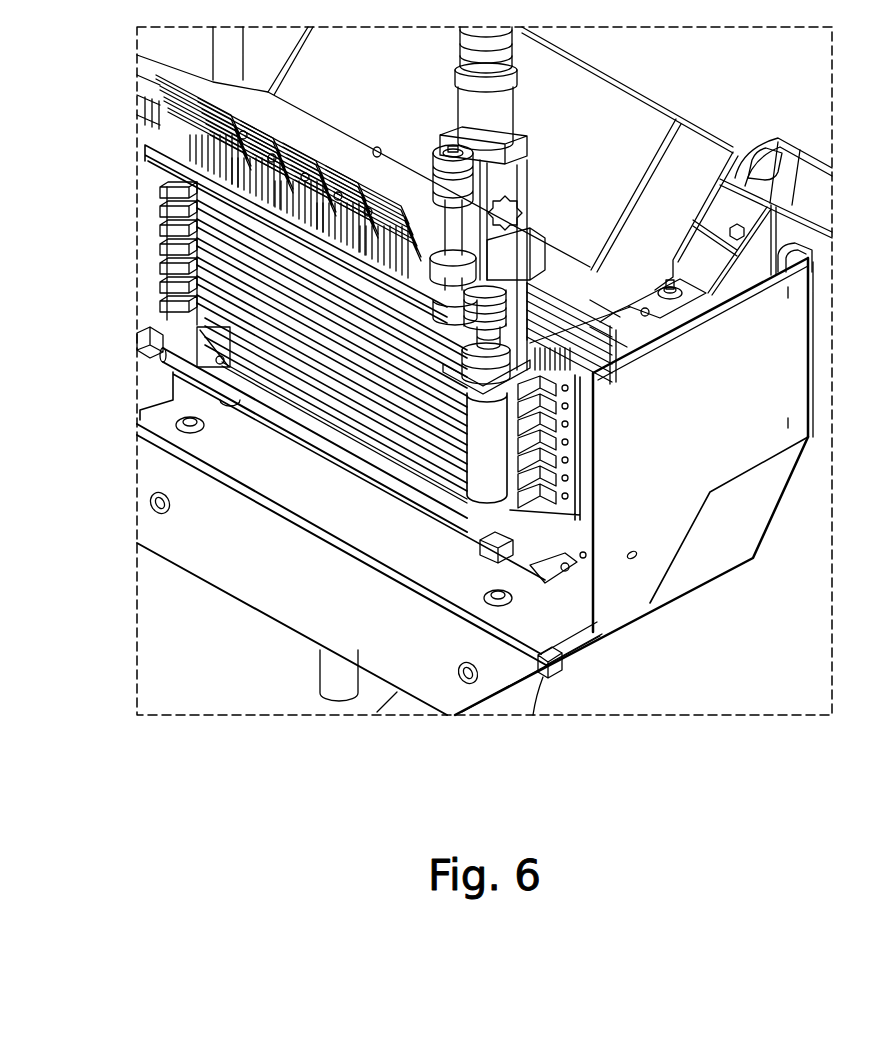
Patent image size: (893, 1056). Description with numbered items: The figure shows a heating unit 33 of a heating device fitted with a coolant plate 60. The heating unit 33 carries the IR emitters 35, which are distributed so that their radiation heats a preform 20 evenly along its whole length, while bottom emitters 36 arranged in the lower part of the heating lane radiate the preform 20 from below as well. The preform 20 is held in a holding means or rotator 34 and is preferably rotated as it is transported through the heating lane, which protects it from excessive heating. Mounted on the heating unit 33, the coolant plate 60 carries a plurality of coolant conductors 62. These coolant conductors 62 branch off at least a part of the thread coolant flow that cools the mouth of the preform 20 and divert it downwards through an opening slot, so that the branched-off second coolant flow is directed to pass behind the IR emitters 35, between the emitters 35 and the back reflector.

The preform 20 is at (487, 448).
The heating unit 33 is at (206, 768).
The rotator 34 is at (483, 345).
The IR emitters 35 is at (195, 253).
The bottom emitters 36 is at (200, 367).
The coolant plate 60 is at (140, 127).
The coolant conductors 62 is at (313, 142).